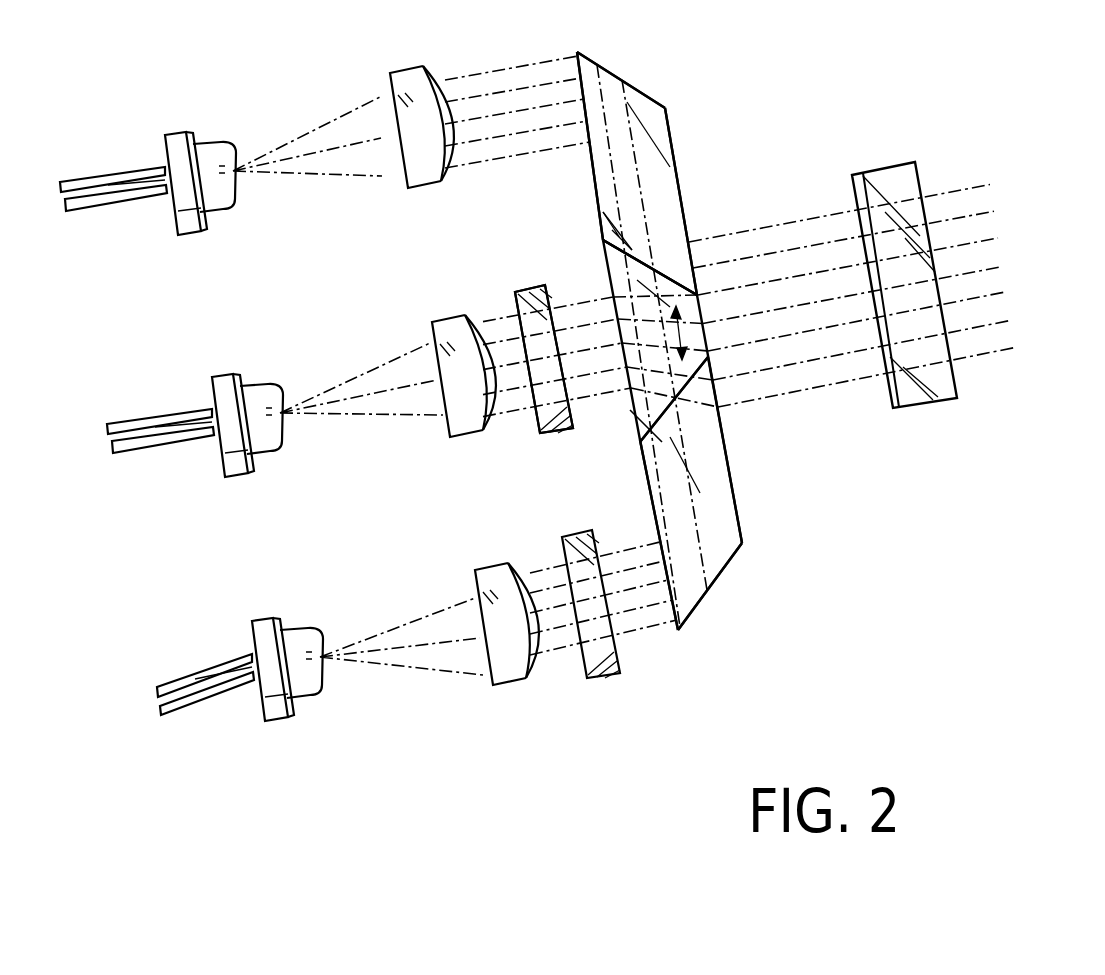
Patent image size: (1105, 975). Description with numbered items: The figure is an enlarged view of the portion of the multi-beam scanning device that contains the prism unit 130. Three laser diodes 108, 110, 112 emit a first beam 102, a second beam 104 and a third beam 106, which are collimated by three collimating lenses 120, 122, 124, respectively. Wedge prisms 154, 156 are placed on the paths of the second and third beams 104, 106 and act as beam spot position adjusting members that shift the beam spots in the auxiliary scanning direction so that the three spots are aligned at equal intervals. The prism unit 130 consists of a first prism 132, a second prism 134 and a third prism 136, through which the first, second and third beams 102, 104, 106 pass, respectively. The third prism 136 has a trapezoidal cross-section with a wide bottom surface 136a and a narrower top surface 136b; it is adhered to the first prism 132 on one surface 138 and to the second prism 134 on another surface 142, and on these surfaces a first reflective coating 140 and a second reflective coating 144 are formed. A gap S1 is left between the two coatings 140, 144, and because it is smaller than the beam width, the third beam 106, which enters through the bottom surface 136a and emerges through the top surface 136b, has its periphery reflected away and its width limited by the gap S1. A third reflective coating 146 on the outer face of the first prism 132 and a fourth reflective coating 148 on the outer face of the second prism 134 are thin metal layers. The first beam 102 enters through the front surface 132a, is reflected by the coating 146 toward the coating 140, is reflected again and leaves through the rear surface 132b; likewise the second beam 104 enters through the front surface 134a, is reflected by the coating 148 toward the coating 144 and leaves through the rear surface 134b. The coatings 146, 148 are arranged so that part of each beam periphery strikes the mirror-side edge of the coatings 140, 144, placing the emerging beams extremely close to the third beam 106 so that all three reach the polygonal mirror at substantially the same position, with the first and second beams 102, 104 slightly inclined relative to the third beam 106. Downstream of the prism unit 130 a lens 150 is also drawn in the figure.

The first beam 102 is at (283, 143).
The second beam 104 is at (377, 628).
The third beam 106 is at (330, 385).
The laser diode 108 is at (175, 138).
The laser diode 110 is at (263, 635).
The laser diode 112 is at (207, 383).
The collimating lens 120 is at (398, 192).
The collimating lens 122 is at (490, 684).
The collimating lens 124 is at (448, 435).
The prism unit 130 is at (724, 370).
The first prism 132 is at (724, 323).
The front surface 132a is at (575, 83).
The rear surface 132b is at (694, 183).
The second prism 134 is at (738, 539).
The front surface 134a is at (670, 597).
The rear surface 134b is at (740, 503).
The third prism 136 is at (688, 400).
The bottom surface 136a is at (603, 290).
The top surface 136b is at (706, 340).
The surface 138 is at (603, 250).
The first reflective coating 140 is at (547, 225).
The surface 142 is at (638, 433).
The second reflective coating 144 is at (592, 457).
The third reflective coating 146 is at (672, 62).
The fourth reflective coating 148 is at (730, 568).
The output lens 150 is at (880, 163).
The wedge prism 154 is at (573, 550).
The wedge prism 156 is at (513, 303).
The gap S1 is at (663, 349).